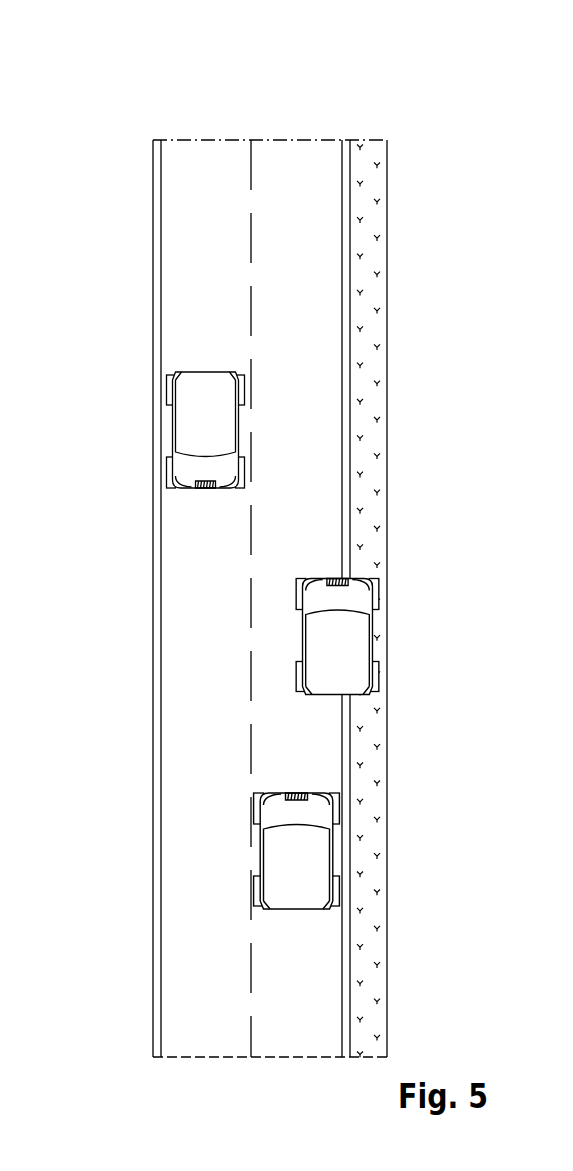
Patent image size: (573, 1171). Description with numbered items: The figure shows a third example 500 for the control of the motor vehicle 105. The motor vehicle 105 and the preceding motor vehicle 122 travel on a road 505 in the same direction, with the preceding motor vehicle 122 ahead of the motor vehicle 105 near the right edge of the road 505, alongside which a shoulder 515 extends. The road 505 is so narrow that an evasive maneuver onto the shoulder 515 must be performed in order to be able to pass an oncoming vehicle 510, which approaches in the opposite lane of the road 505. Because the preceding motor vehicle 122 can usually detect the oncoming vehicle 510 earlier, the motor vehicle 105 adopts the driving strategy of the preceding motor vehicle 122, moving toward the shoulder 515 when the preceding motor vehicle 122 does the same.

The third example 500 is at (118, 88).
The road 505 is at (297, 150).
The shoulder 515 is at (378, 330).
The oncoming vehicle 510 is at (203, 488).
The preceding motor vehicle 122 is at (375, 637).
The motor vehicle 105 is at (296, 910).